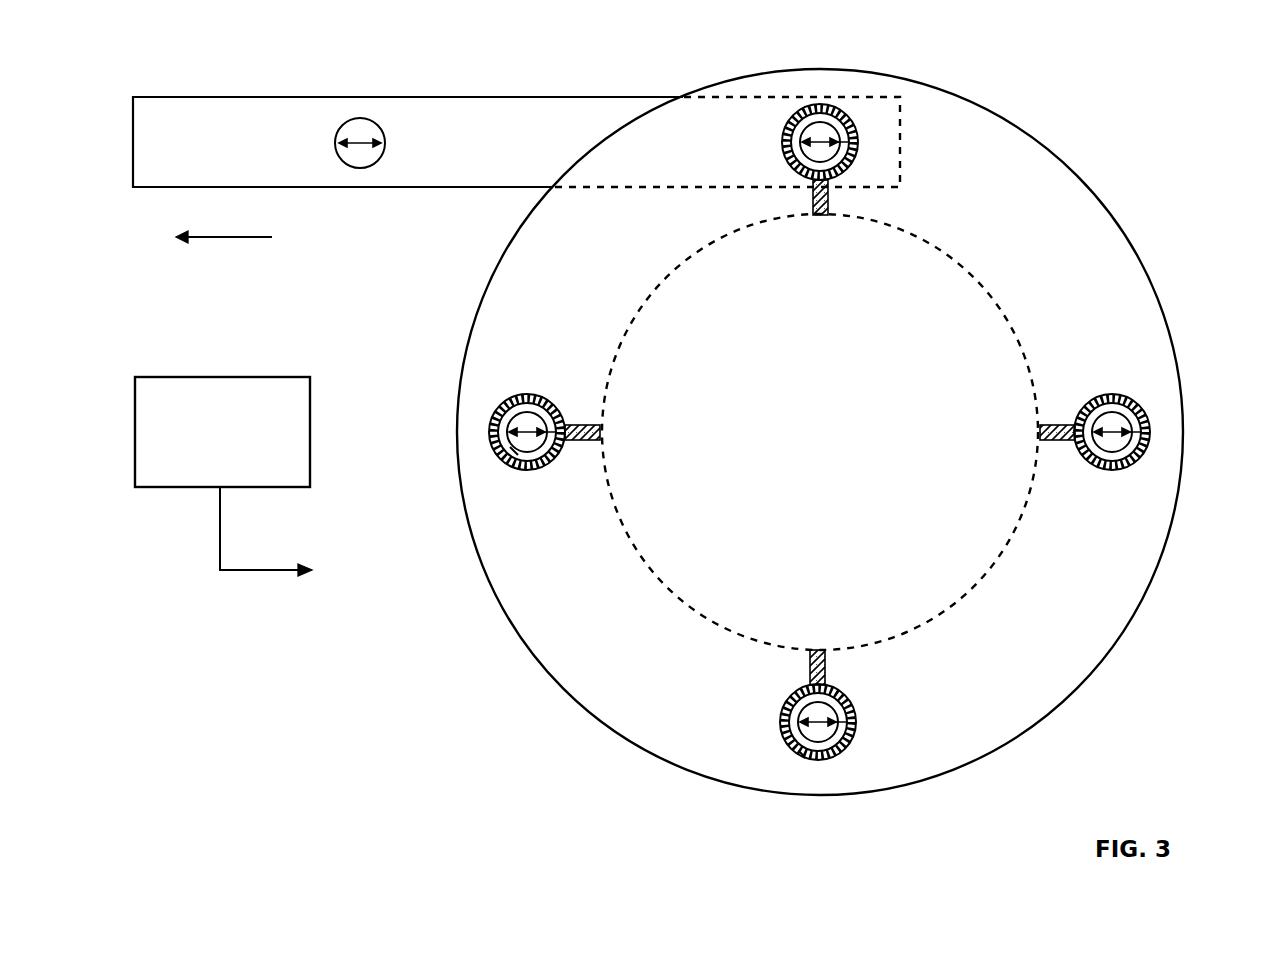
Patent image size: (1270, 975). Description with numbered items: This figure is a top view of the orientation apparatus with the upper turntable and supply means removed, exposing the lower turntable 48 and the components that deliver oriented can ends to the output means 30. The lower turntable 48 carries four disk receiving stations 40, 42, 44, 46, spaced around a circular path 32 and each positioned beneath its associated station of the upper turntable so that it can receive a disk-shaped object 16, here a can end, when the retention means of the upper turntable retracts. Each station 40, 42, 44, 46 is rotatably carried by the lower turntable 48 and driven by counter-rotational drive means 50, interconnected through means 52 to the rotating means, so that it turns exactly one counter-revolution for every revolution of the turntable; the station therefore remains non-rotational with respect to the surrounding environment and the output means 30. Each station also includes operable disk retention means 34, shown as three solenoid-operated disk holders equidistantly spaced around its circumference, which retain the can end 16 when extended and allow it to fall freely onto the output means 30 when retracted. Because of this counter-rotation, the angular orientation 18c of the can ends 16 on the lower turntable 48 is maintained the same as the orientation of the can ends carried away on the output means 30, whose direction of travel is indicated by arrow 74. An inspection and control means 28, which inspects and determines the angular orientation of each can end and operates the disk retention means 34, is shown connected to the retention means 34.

The output means 30 is at (221, 117).
The disk-shaped object 16 is at (383, 140).
The angular orientation 18c is at (365, 150).
The disk receiving station 40 is at (770, 158).
The disk receiving station 42 is at (533, 372).
The disk receiving station 44 is at (770, 715).
The disk receiving station 46 is at (1100, 383).
The lower turntable 48 is at (1075, 213).
The circular path 32 is at (996, 300).
The counter-rotational drive means 50 is at (552, 403).
The interconnecting means 52 is at (1045, 432).
The disk retention means 34 is at (522, 460).
The inspection and control means 28 is at (232, 400).
The conveyor direction arrow 74 is at (265, 240).